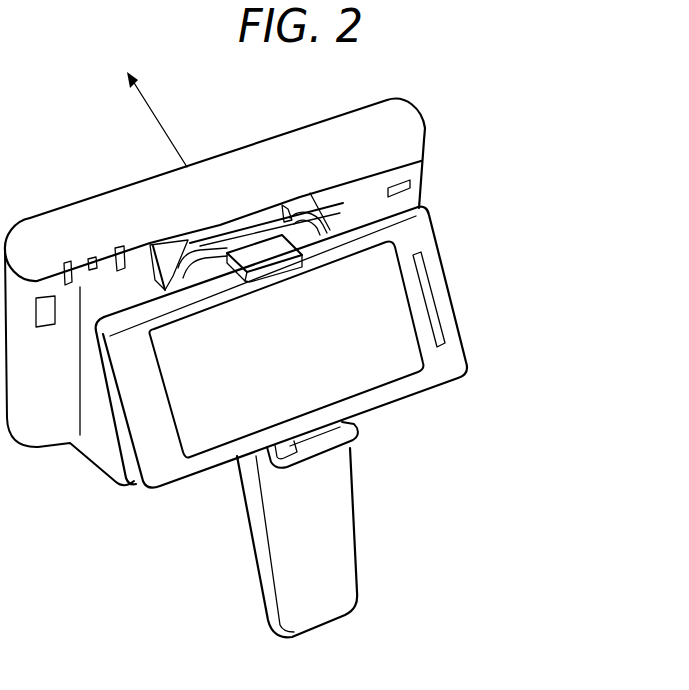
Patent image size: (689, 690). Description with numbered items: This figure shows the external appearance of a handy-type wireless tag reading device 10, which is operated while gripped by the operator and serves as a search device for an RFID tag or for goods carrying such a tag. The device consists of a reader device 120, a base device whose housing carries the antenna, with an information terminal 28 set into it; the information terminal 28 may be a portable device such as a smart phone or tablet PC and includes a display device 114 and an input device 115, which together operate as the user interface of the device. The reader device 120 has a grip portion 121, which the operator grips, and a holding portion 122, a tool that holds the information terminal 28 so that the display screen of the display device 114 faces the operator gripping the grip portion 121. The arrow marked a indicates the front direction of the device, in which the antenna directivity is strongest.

The wireless tag reading device 10 is at (297, 349).
The reader device 120 is at (238, 168).
The holding portion 122 is at (272, 273).
The display device 114 is at (343, 347).
The input device 115 is at (287, 350).
The information terminal 28 is at (433, 263).
The grip portion 121 is at (342, 526).